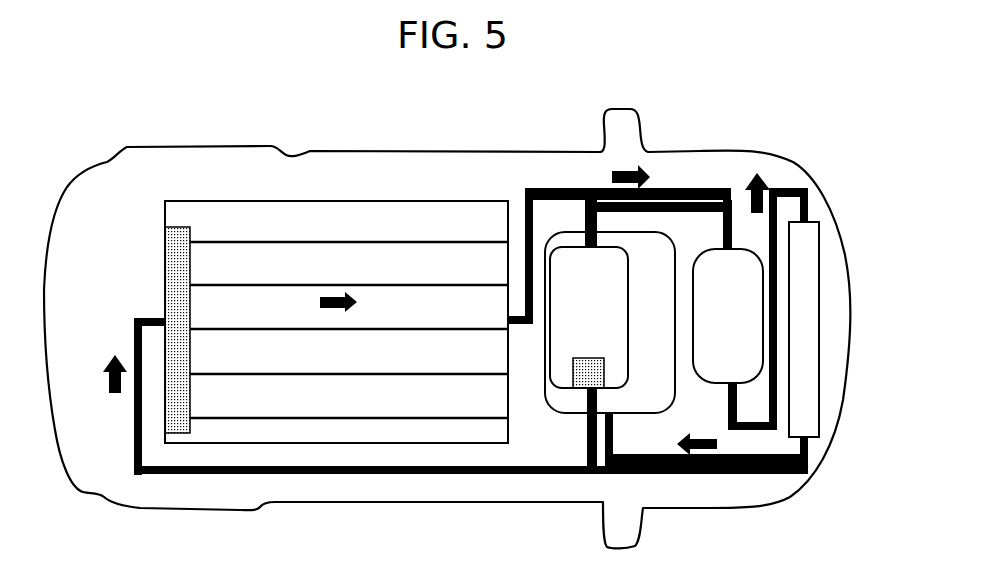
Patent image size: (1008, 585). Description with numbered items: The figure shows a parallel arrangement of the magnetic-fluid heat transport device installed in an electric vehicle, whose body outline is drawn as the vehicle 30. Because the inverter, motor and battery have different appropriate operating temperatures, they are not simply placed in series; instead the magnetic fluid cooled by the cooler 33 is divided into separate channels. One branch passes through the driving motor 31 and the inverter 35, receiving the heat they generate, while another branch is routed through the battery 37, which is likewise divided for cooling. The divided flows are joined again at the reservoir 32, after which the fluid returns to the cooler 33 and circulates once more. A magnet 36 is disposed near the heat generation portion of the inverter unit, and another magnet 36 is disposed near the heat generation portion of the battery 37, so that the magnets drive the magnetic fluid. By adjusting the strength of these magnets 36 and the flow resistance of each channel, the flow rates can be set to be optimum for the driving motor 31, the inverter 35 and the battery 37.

The vehicle 30 is at (189, 132).
The driving motor 31 is at (660, 272).
The reservoir 32 is at (742, 288).
The cooler 33 is at (818, 318).
The inverter 35 is at (586, 280).
The magnet 36 is at (165, 257).
The battery 37 is at (372, 230).